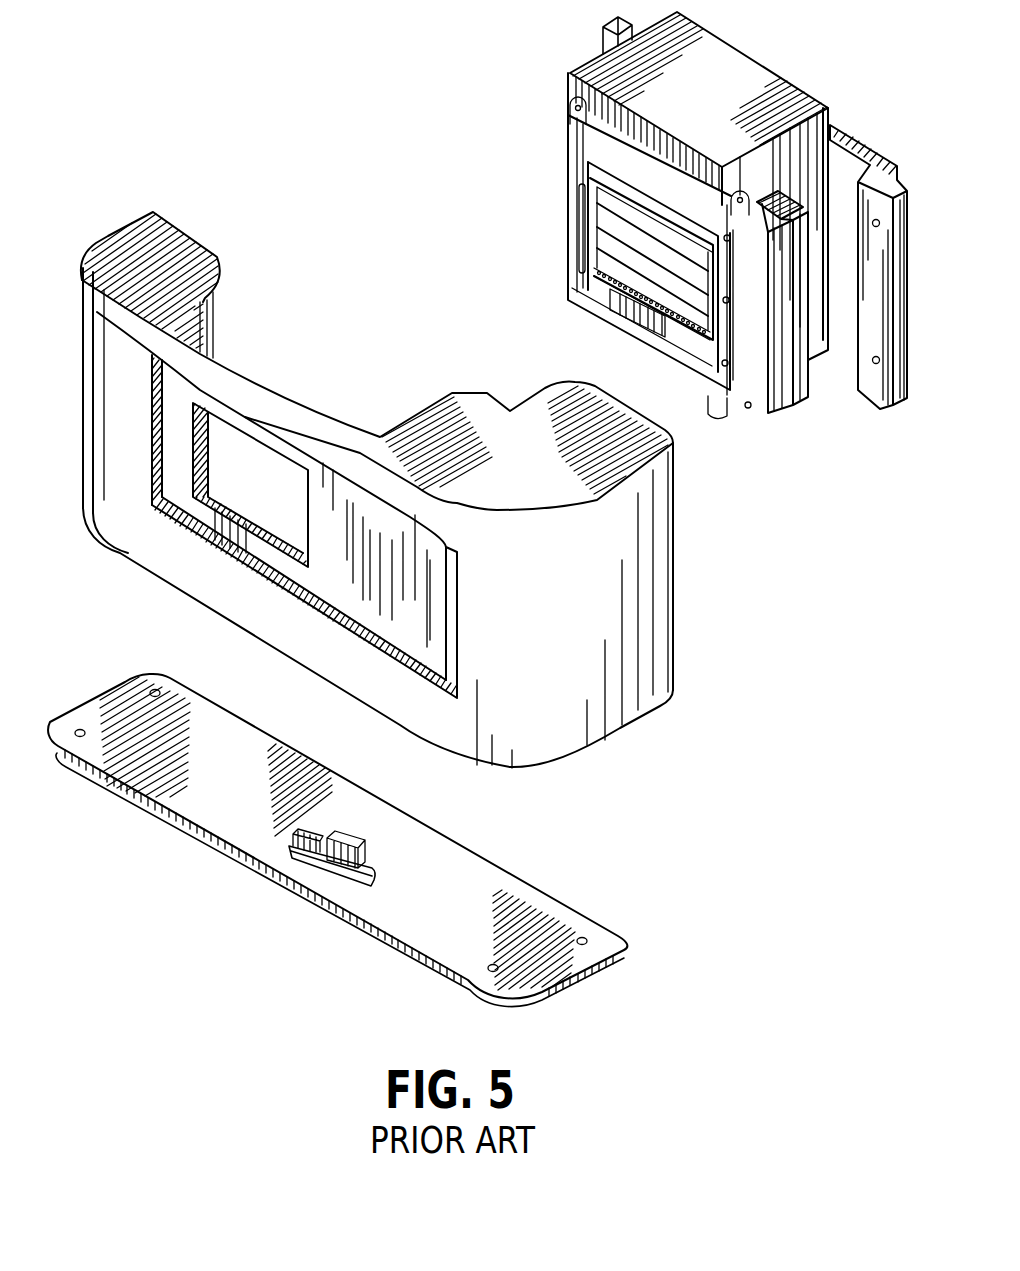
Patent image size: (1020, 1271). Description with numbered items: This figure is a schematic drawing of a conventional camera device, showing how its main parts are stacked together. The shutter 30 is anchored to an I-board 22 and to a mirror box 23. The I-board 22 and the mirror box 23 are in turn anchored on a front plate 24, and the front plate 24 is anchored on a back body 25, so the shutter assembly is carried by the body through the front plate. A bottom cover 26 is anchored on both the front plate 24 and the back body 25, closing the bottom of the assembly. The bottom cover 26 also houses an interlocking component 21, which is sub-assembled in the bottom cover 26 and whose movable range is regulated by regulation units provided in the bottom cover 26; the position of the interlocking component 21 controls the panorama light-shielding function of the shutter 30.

The interlocking component 21 is at (318, 858).
The I-board 22 is at (830, 127).
The mirror box 23 is at (727, 65).
The front plate 24 is at (875, 393).
The back body 25 is at (205, 268).
The bottom cover 26 is at (573, 927).
The shutter 30 is at (795, 374).